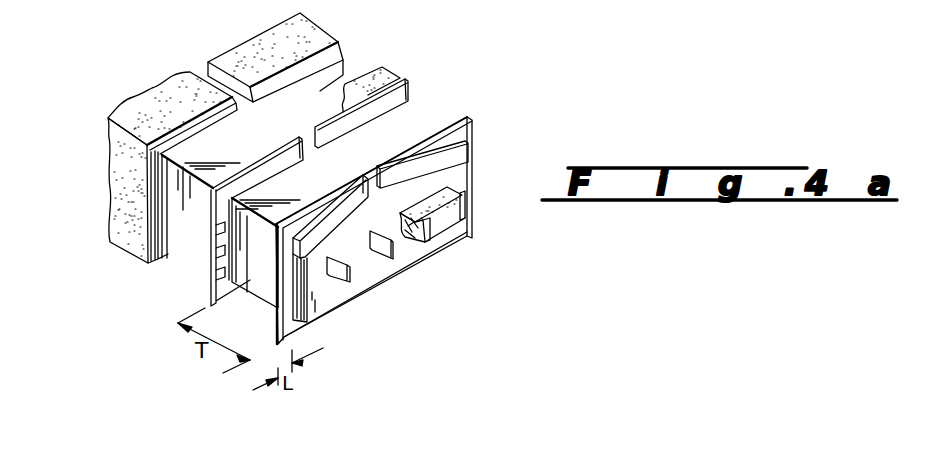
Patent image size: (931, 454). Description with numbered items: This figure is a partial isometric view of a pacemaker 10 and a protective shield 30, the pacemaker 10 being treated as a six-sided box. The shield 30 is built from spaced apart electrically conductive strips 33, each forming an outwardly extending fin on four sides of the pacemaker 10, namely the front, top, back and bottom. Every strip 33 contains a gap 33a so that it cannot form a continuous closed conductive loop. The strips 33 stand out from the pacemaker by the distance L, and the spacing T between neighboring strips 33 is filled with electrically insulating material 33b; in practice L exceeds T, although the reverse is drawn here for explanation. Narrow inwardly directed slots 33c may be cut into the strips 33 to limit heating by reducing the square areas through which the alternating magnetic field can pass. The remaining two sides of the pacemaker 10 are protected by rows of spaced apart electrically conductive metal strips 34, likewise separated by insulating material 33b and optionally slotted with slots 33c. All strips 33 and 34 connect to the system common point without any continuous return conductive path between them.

The pacemaker 10 is at (201, 257).
The shield 30 is at (484, 151).
The electrically conductive strips 33 is at (345, 50).
The gap 33a is at (373, 187).
The electrically insulating material 33b is at (122, 172).
The slots 33c is at (213, 252).
The electrically conductive metal strips 34 is at (387, 259).